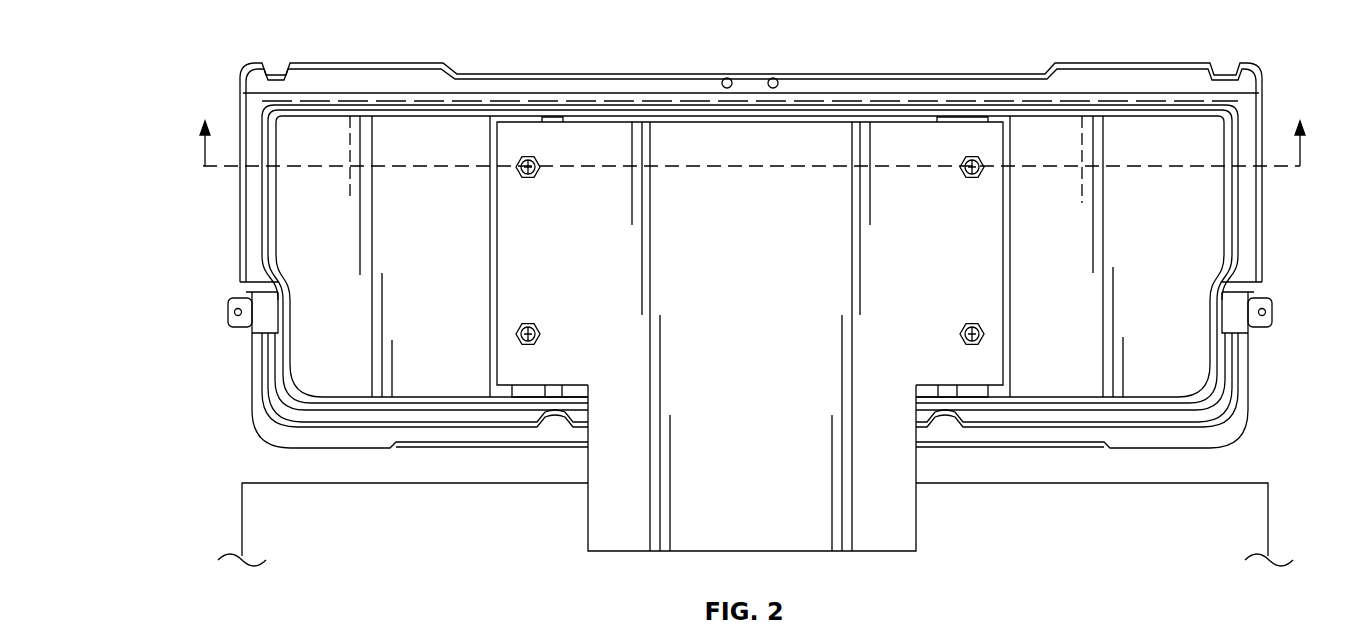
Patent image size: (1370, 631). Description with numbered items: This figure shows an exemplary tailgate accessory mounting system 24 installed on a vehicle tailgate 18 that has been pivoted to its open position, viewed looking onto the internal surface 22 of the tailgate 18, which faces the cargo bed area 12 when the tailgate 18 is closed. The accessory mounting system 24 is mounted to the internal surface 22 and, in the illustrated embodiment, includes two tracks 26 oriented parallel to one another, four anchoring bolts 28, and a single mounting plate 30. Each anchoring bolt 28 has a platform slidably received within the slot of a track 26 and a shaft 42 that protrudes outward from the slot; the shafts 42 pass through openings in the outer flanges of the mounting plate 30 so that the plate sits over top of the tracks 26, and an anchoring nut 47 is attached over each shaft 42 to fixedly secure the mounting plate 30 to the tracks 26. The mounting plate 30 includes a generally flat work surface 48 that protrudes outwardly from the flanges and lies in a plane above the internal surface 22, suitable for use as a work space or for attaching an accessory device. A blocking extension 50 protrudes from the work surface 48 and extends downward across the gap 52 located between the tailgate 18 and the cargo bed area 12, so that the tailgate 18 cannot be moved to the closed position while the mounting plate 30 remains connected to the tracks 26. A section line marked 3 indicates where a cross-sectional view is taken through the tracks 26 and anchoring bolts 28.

The cargo bed area 12 is at (460, 533).
The tailgate 18 is at (1165, 73).
The internal surface 22 is at (1146, 311).
The accessory mounting system 24 is at (670, 138).
The track 26 is at (485, 129).
The anchoring bolt 28 is at (508, 160).
The mounting plate 30 is at (784, 140).
The shaft 42 is at (534, 180).
The anchoring nut 47 is at (532, 155).
The work surface 48 is at (736, 341).
The blocking extension 50 is at (897, 515).
The gap 52 is at (275, 467).
The section line 3- 3 is at (752, 129).